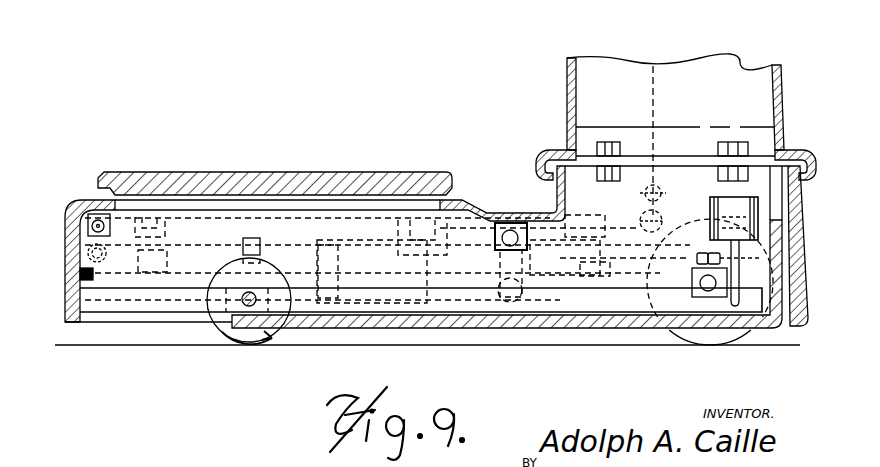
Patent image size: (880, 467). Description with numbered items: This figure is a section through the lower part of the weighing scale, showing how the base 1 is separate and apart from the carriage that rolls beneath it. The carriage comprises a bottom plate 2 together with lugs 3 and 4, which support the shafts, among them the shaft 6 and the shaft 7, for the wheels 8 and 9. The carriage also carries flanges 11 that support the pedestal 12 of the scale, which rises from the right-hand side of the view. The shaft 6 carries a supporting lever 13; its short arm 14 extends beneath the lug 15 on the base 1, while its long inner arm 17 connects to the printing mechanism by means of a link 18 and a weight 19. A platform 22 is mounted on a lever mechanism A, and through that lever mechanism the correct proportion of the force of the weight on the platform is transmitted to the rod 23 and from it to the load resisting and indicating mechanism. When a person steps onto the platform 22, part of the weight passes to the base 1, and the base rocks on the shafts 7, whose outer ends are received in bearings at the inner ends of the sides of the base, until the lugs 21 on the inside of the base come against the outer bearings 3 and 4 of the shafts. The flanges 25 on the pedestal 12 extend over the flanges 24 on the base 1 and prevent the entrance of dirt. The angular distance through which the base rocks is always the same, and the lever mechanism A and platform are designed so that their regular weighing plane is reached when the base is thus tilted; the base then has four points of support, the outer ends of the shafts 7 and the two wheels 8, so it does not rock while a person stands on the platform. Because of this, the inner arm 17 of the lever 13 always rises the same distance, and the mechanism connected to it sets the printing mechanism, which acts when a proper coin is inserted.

The base 1 is at (78, 209).
The bottom plate 2 is at (477, 330).
The lug 3 is at (245, 296).
The lug 4 is at (697, 283).
The shaft 6 is at (216, 341).
The shaft 7 is at (700, 261).
The wheel 8 is at (250, 340).
The wheel 9 is at (702, 338).
The flange 11 is at (638, 208).
The pedestal 12 is at (576, 100).
The supporting lever 13 is at (315, 300).
The short arm 14 is at (250, 300).
The lug 15 is at (90, 275).
The long inner arm 17 is at (591, 302).
The link 18 is at (740, 274).
The weight 19 is at (713, 207).
The lug 21 is at (259, 244).
The platform 22 is at (312, 180).
The rod 23 is at (658, 112).
The flange 24 is at (560, 180).
The flange 25 is at (545, 157).
The lever mechanism A is at (541, 252).